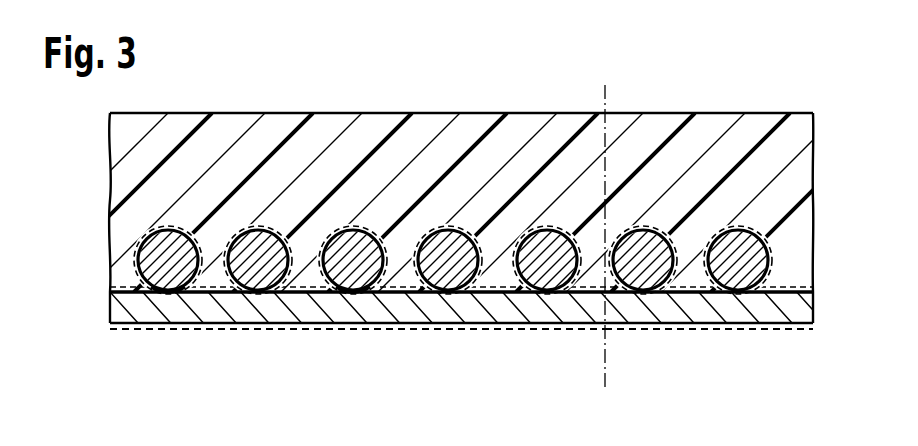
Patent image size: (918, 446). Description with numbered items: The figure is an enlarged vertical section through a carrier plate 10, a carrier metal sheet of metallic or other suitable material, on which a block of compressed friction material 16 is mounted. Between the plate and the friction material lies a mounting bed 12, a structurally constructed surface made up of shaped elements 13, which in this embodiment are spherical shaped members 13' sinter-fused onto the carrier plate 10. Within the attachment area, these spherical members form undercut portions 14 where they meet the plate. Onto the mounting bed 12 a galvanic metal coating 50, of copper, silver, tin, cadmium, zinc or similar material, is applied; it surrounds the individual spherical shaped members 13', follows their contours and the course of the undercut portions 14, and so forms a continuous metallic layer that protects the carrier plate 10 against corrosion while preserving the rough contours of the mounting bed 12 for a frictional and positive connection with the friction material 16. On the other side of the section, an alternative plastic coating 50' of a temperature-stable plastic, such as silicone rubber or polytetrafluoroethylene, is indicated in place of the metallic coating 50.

The carrier plate 10 is at (177, 313).
The mounting bed 12 is at (126, 240).
The shaped elements 13 is at (488, 260).
The spherical shaped members 13' is at (237, 335).
The undercut portions 14 is at (205, 281).
The block of friction material 16 is at (122, 147).
The galvanic coating 50 is at (357, 226).
The plastic coating 50' is at (709, 224).